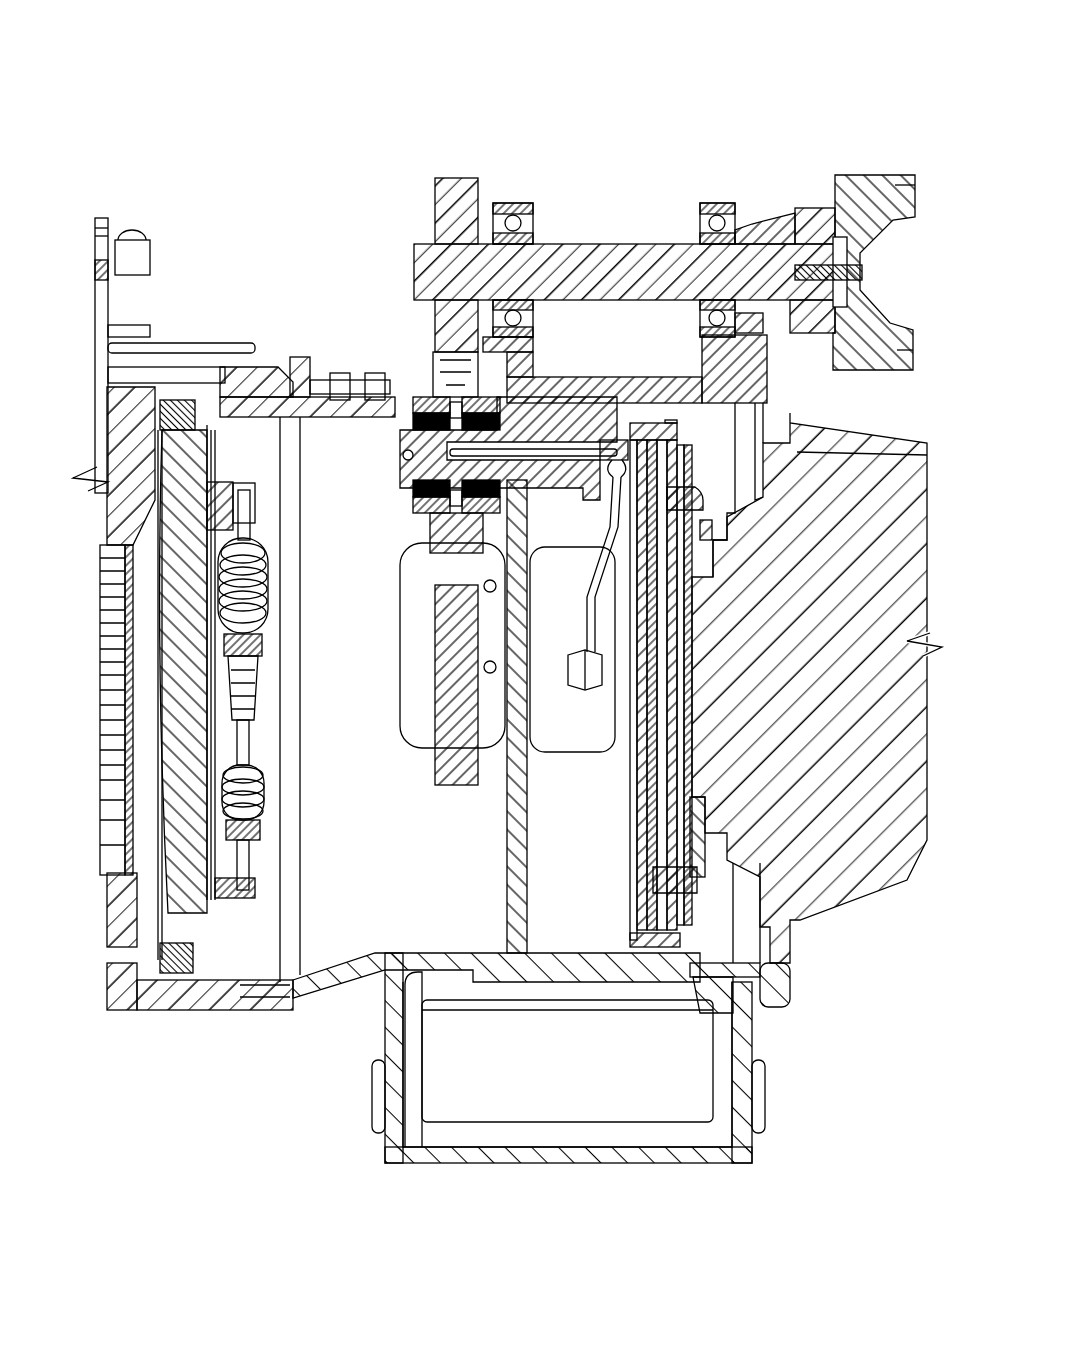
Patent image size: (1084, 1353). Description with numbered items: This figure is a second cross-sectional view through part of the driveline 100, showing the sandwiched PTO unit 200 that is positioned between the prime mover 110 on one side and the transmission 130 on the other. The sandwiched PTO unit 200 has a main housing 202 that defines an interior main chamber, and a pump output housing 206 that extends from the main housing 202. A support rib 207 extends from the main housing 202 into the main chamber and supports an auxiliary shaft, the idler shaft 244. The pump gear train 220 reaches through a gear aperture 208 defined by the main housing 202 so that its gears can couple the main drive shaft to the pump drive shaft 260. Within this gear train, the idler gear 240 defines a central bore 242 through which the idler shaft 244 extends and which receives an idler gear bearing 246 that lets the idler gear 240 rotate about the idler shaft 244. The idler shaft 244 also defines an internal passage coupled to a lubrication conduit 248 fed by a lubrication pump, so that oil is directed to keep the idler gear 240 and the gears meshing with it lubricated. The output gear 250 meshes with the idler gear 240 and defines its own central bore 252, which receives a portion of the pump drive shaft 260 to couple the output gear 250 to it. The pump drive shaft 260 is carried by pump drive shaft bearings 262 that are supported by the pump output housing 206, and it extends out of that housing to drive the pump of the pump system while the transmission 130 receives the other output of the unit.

The driveline 100 is at (172, 40).
The prime mover 110 is at (92, 432).
The transmission 130 is at (830, 897).
The sandwiched PTO unit 200 is at (316, 322).
The main housing 202 is at (375, 972).
The pump output housing 206 is at (763, 372).
The support rib 207 is at (520, 910).
The gear aperture 208 is at (403, 396).
The pump gear train 220 is at (392, 242).
The idler gear 240 is at (398, 398).
The central bore 242 is at (458, 392).
The idler shaft 244 is at (575, 400).
The idler gear bearing 246 is at (520, 400).
The lubrication conduit 248 is at (620, 438).
The output gear 250 is at (455, 178).
The central bore 252 is at (458, 237).
The pump drive shaft 260 is at (650, 128).
The pump drive shaft bearings 262 is at (518, 203).